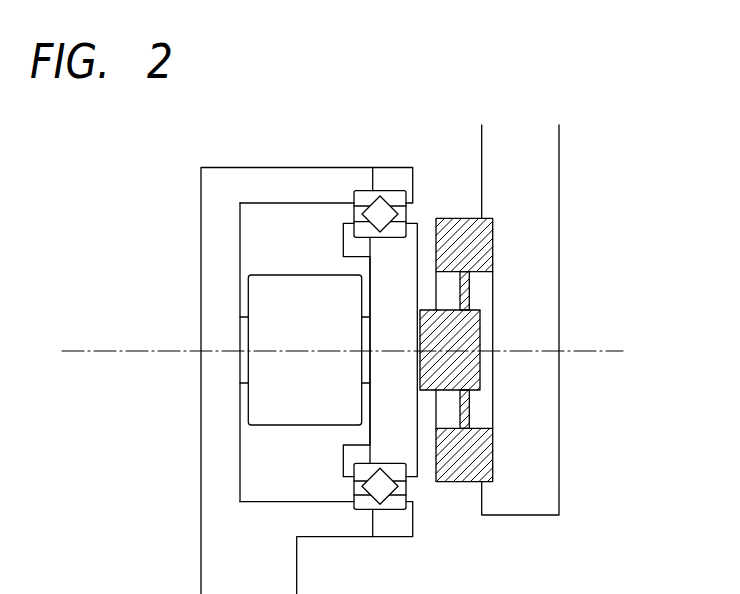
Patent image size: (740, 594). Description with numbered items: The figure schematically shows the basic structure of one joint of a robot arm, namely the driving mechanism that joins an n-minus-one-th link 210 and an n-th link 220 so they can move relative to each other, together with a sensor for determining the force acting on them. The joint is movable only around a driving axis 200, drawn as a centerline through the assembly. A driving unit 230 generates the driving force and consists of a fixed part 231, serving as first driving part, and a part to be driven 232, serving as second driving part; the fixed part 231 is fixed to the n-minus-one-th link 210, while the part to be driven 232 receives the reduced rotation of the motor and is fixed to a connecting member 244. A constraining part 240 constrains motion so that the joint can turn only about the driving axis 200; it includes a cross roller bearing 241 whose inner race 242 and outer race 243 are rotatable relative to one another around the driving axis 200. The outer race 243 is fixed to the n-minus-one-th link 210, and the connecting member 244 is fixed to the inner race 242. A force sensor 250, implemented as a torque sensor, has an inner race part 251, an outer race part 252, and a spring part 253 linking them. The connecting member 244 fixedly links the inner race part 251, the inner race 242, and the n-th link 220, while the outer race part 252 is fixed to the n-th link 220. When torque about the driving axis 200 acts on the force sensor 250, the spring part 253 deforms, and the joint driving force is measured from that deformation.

The driving axis 200 is at (105, 352).
The n−1-th link 210 is at (225, 177).
The n-th link 220 is at (547, 162).
The driving unit 230 is at (305, 285).
The fixed part 231 is at (242, 336).
The part to be driven 232 is at (360, 325).
The constraining part 240 is at (463, 58).
The cross roller bearing 241 is at (407, 98).
The inner race 242 is at (360, 230).
The outer race 243 is at (394, 197).
The connecting member 244 is at (413, 247).
The force sensor 250 is at (625, 226).
The inner race part 251 is at (473, 368).
The outer race part 252 is at (478, 248).
The spring part 253 is at (470, 295).